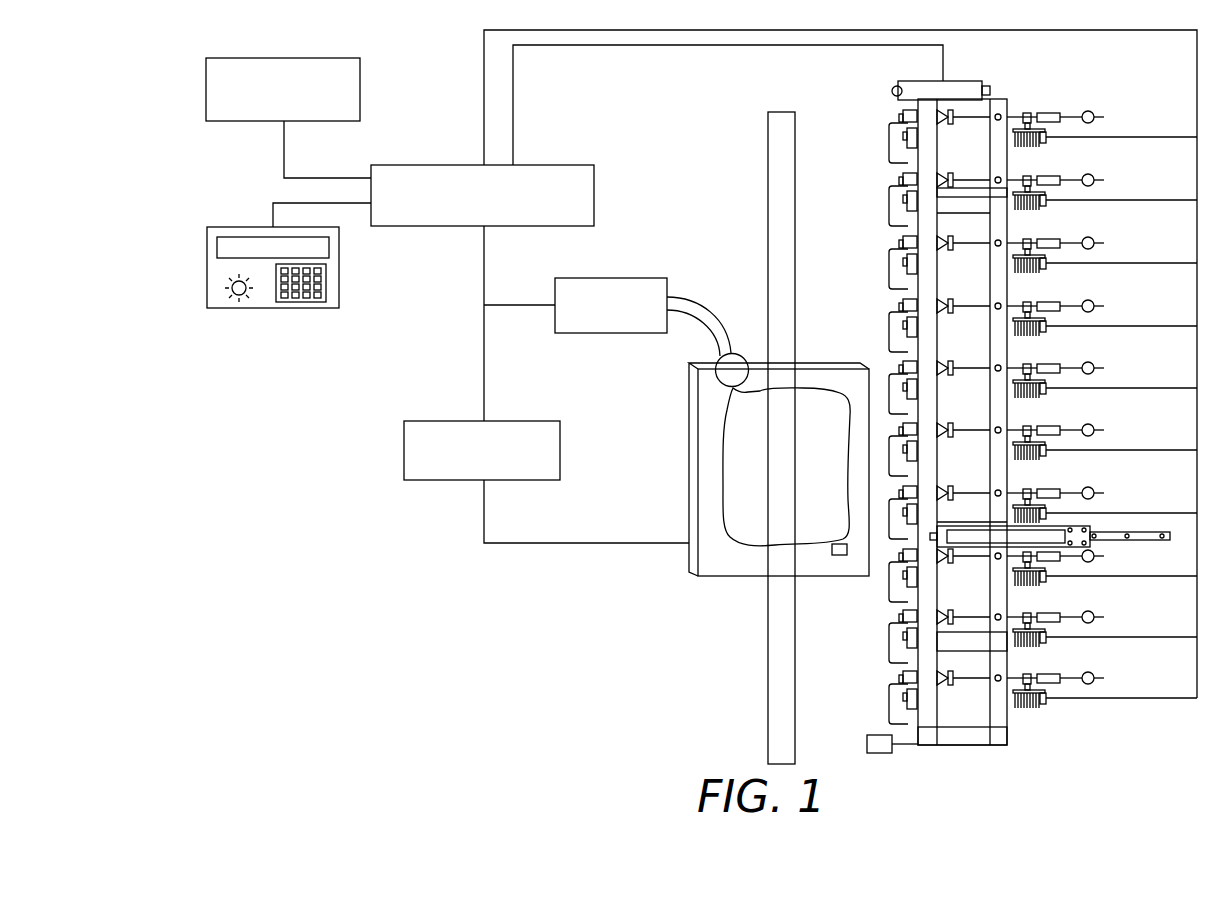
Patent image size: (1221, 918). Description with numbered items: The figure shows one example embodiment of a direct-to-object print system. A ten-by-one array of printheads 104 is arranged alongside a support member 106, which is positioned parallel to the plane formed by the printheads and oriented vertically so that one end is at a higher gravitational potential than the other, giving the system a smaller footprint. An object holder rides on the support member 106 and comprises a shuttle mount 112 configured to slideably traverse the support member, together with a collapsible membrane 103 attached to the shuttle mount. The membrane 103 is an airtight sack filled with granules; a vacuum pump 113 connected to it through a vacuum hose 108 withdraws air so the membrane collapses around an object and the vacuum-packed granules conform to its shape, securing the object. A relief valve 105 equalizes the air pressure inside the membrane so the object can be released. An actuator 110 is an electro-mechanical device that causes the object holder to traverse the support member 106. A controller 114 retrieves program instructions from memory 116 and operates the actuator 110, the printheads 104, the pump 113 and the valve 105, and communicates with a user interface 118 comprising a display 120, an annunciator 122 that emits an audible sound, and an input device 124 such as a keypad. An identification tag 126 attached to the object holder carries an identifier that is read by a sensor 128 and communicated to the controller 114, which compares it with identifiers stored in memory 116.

The collapsible membrane 103 is at (803, 474).
The array of printheads 104 is at (866, 228).
The relief valve 105 is at (742, 353).
The support member 106 is at (768, 672).
The vacuum hose 108 is at (693, 302).
The actuator 110 is at (404, 452).
The shuttle mount 112 is at (732, 565).
The vacuum pump 113 is at (601, 336).
The controller 114 is at (596, 193).
The memory 116 is at (206, 91).
The user interface 118 is at (266, 309).
The display 120 is at (237, 236).
The annunciator 122 is at (229, 290).
The input device 124 is at (326, 288).
The identification tag 126 is at (977, 80).
The sensor 128 is at (876, 735).